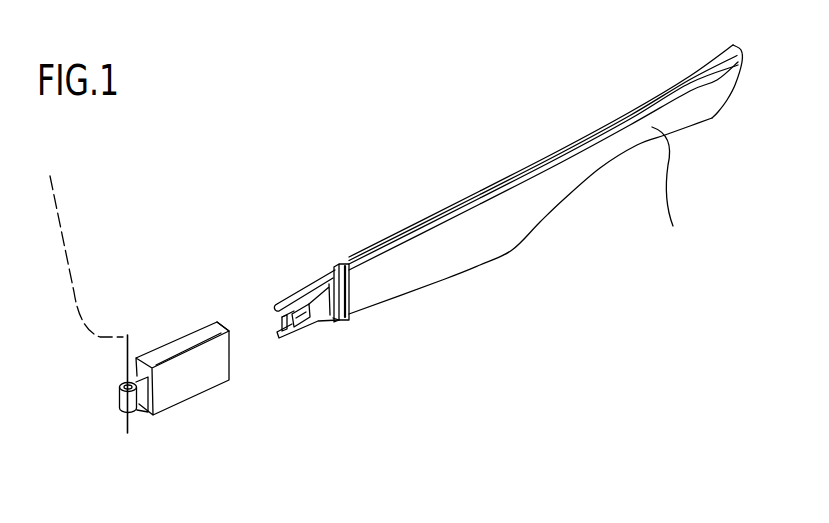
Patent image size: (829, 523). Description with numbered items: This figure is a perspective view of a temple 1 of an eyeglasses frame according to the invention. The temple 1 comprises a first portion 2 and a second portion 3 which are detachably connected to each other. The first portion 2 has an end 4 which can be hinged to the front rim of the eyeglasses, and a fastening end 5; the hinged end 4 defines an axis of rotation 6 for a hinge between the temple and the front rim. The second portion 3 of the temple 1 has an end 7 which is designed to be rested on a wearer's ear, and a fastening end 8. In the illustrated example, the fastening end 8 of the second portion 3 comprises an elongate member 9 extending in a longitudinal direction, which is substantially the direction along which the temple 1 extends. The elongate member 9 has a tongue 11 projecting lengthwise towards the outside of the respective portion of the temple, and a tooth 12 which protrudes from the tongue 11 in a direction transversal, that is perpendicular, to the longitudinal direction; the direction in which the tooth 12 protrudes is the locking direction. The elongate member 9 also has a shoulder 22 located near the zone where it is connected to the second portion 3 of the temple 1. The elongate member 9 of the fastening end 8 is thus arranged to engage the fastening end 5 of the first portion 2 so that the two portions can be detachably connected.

The temple 1 is at (423, 170).
The first portion 2 is at (182, 283).
The second portion 3 is at (536, 190).
The end 4 is at (118, 394).
The fastening end 5 is at (220, 325).
The axis of rotation 6 is at (86, 292).
The end 7 is at (666, 191).
The fastening end 8 is at (357, 279).
The elongate member 9 is at (337, 329).
The tongue 11 is at (308, 316).
The tooth 12 is at (281, 334).
The shoulder 22 is at (346, 314).